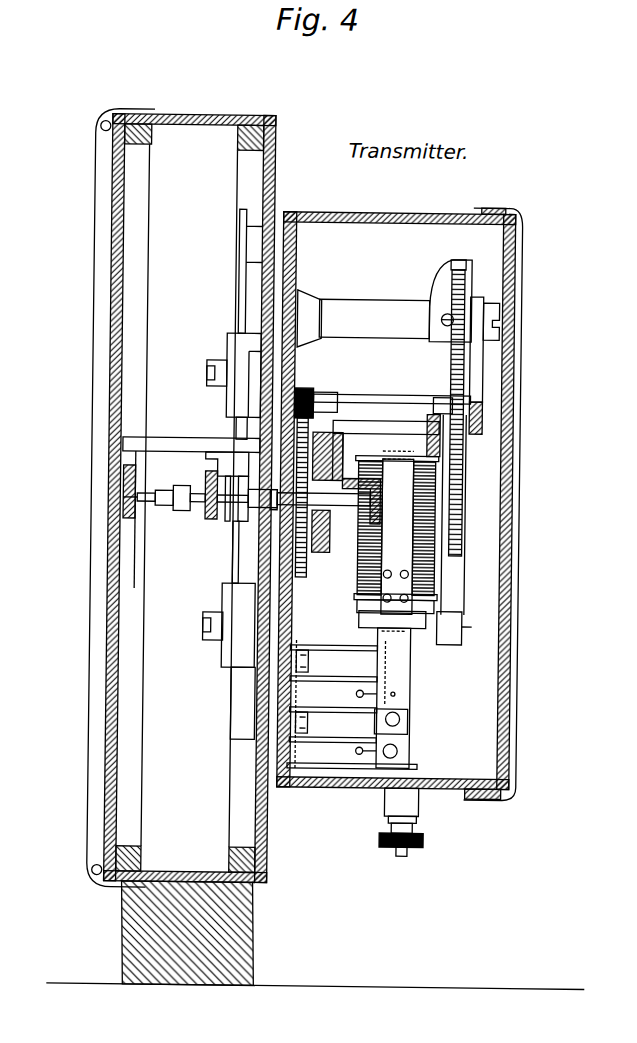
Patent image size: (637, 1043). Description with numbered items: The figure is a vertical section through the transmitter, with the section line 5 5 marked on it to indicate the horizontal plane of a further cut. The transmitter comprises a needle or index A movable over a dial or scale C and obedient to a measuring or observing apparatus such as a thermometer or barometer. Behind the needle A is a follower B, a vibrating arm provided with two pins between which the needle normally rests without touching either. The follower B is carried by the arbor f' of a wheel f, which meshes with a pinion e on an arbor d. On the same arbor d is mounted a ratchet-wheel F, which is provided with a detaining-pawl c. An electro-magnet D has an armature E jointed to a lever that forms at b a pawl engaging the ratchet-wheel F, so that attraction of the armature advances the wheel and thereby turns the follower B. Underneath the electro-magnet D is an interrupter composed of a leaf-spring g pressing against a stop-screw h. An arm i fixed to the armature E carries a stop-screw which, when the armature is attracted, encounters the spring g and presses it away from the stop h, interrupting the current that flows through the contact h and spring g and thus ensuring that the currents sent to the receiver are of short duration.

The scale C is at (236, 283).
The needle A is at (226, 524).
The follower B is at (240, 524).
The ratchet-wheel F is at (450, 320).
The detaining-pawl c is at (466, 262).
The pawl b is at (463, 488).
The arbor d is at (381, 400).
The pinion e is at (304, 392).
The wheel f is at (305, 510).
The arbor of wheel f f' is at (360, 508).
The electro-magnet D is at (390, 533).
The armature E is at (392, 620).
The arm i is at (412, 668).
The leaf-spring g is at (412, 735).
The stop-screw h is at (401, 752).
The line 5 5 is at (513, 404).